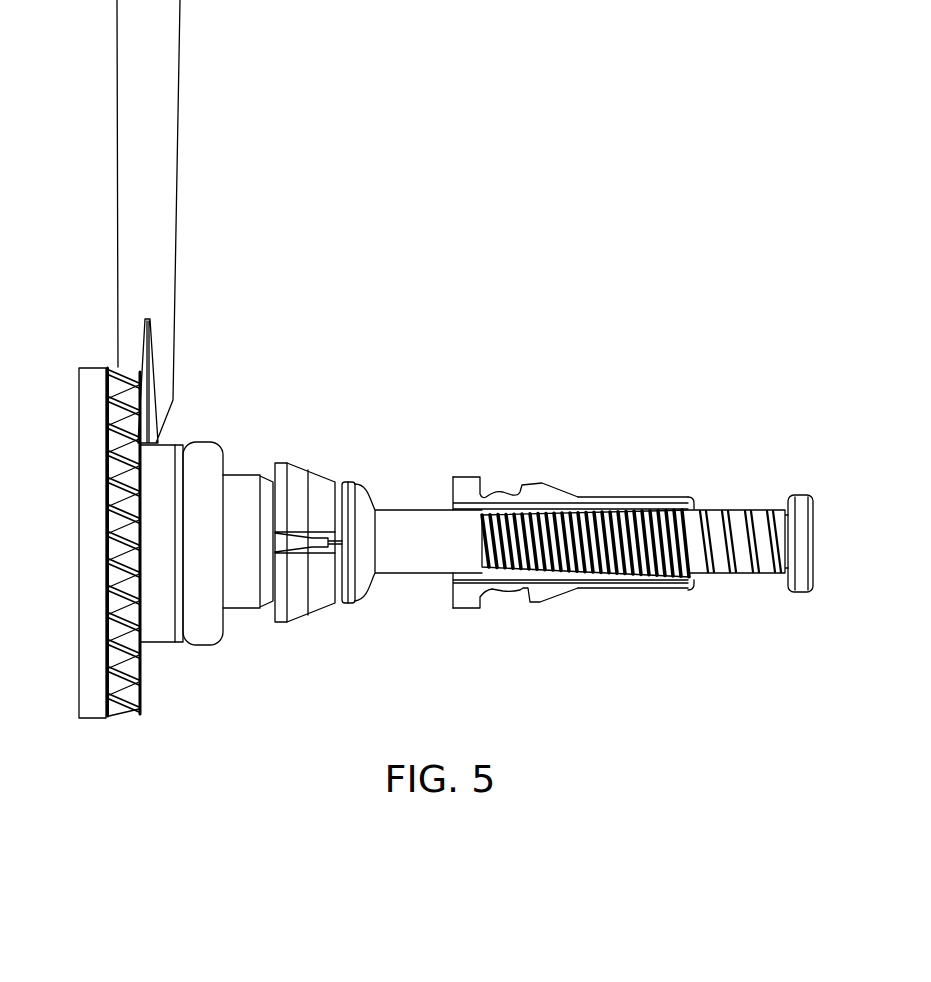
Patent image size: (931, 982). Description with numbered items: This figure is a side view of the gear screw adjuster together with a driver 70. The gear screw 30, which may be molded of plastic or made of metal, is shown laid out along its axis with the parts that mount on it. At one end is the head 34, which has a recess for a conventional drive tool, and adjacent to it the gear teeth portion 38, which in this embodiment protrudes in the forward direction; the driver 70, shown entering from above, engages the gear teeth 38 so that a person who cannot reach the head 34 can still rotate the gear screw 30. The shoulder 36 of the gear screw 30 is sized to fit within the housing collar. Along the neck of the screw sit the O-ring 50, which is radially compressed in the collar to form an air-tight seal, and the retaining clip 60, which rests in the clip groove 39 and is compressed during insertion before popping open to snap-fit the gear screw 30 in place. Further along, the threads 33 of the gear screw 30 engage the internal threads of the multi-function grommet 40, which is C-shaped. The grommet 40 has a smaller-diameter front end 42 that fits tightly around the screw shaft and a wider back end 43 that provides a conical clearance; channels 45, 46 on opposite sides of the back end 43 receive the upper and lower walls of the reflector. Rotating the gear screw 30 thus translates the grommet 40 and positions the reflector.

The driver 70 is at (163, 52).
The head 34 is at (80, 408).
The gear teeth portion 38 is at (126, 672).
The shoulder 36 is at (70, 722).
The O-ring 50 is at (203, 443).
The clip groove 39 is at (267, 610).
The retaining clip 60 is at (310, 480).
The multi-function grommet 40 is at (575, 590).
The back end 43 is at (448, 470).
The channel 45 is at (500, 492).
The channel 46 is at (503, 590).
The front end 42 is at (575, 485).
The threads 33 is at (712, 578).
The gear screw 30 is at (802, 505).